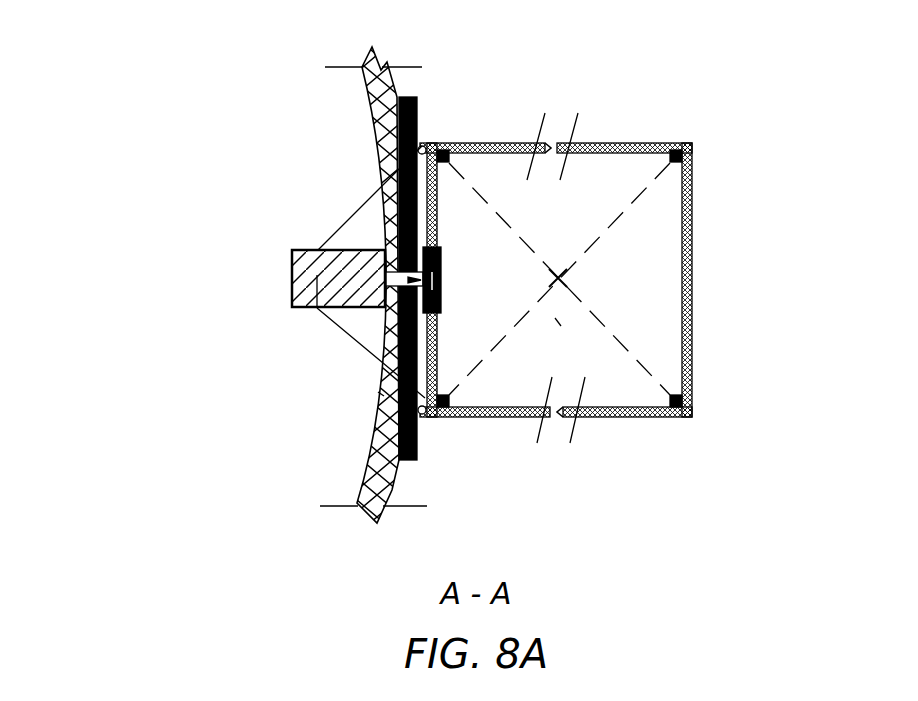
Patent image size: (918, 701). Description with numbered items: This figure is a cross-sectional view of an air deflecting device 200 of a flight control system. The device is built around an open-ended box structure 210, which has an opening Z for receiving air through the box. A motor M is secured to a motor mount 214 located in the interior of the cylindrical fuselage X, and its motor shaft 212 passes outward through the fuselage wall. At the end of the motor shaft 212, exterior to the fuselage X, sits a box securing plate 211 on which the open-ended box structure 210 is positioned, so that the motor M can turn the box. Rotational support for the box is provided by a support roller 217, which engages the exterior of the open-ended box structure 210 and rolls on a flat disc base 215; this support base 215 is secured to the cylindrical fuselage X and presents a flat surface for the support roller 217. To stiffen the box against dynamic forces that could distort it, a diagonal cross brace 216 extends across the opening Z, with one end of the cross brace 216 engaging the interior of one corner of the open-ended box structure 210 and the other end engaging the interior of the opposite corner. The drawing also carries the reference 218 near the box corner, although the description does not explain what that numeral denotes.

The air deflecting device 200 is at (230, 103).
The open-ended box structure 210 is at (600, 143).
The box securing plate 211 is at (437, 283).
The motor shaft 212 is at (437, 327).
The motor mount 214 is at (362, 235).
The flat disc base 215 is at (418, 112).
The diagonal cross brace 216 is at (590, 250).
The support roller 217 is at (383, 190).
The fastener 218 is at (420, 143).
The motor M is at (317, 275).
The cylindrical fuselage X is at (380, 393).
The opening Z is at (558, 322).